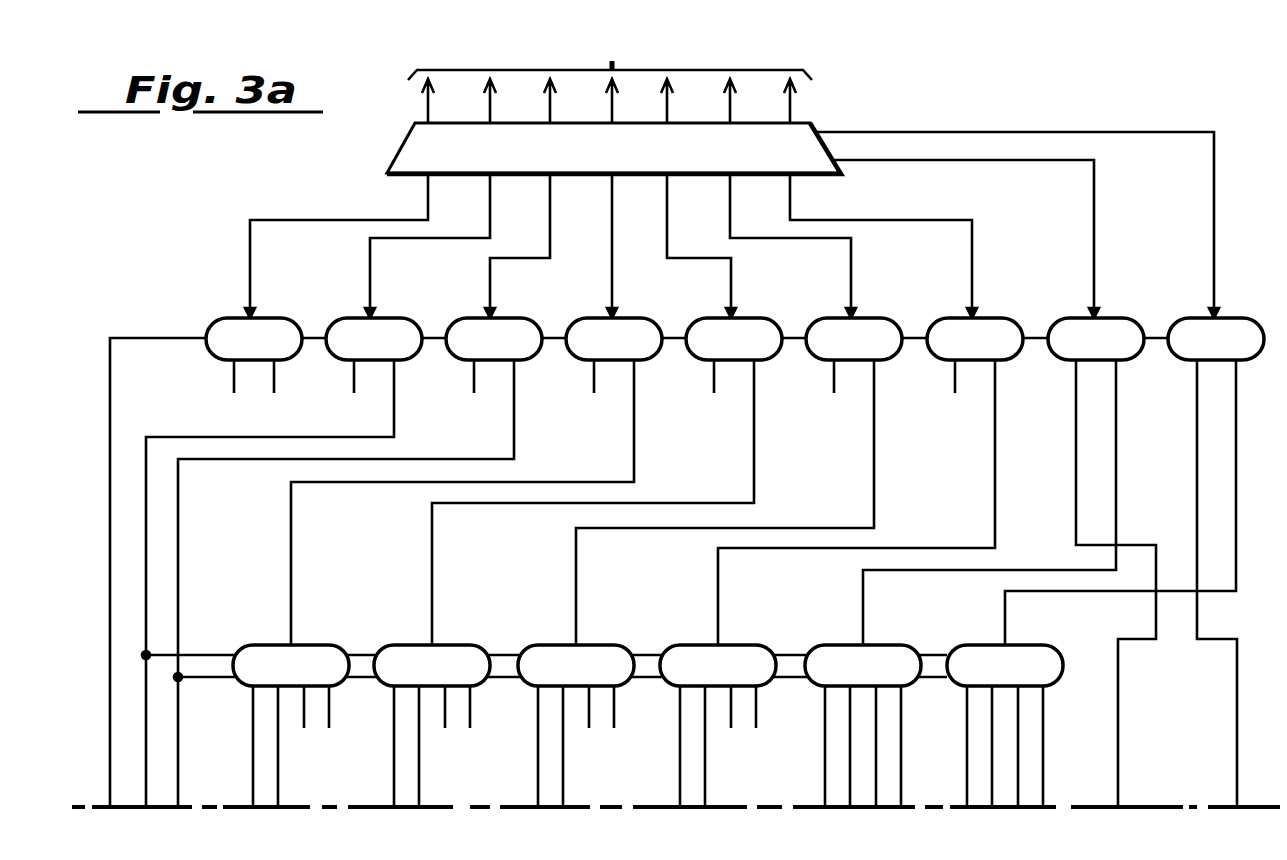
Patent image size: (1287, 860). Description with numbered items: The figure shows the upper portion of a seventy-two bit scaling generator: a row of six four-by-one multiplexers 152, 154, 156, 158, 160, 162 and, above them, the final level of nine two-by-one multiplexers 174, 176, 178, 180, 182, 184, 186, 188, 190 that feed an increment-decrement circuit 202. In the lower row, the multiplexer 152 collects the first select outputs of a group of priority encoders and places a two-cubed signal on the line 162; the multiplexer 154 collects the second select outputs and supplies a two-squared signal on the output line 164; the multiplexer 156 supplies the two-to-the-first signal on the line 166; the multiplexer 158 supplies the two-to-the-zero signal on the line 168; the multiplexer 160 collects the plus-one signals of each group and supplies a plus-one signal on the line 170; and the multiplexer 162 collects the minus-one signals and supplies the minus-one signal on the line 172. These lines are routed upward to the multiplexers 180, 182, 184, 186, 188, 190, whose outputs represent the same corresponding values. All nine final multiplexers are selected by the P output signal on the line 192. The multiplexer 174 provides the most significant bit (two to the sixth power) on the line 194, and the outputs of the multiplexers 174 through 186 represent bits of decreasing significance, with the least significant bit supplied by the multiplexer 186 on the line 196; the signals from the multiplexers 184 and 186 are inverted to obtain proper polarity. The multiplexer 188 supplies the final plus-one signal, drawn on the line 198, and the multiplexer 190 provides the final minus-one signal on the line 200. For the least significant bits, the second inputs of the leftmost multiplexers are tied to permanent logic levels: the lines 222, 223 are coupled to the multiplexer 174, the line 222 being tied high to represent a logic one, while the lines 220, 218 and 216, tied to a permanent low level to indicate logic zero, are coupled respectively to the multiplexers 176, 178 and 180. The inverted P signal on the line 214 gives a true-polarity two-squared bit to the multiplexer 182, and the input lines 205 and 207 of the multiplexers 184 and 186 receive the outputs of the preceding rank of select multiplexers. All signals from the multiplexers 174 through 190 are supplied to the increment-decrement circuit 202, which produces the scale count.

The multiplexer 152 is at (308, 645).
The multiplexer 154 is at (449, 645).
The multiplexer 156 is at (593, 645).
The multiplexer 158 is at (735, 645).
The multiplexer 160 is at (880, 645).
The multiplexer / output line 162 is at (288, 522).
The output line 164 is at (431, 537).
The line 166 is at (573, 558).
The line 168 is at (716, 575).
The line 170 is at (858, 595).
The line 172 is at (1003, 606).
The multiplexer 174 is at (282, 317).
The multiplexer 176 is at (402, 317).
The multiplexer 178 is at (522, 317).
The multiplexer 180 is at (642, 317).
The multiplexer 182 is at (762, 317).
The multiplexer 184 is at (882, 317).
The multiplexer 186 is at (1004, 317).
The multiplexer 188 is at (1124, 317).
The multiplexer 190 is at (1242, 317).
The line 192 is at (147, 336).
The line 194 is at (288, 219).
The line 196 is at (868, 220).
The output line from increment/decrement circuit 198 is at (963, 160).
The line 200 is at (1142, 132).
The increment-decrement circuit 202 is at (405, 140).
The 2-1 multiplexer input 205 is at (831, 377).
The 2-1 multiplexer input 207 is at (952, 377).
The line 214 is at (711, 377).
The line 216 is at (591, 377).
The line 218 is at (471, 377).
The line 220 is at (351, 377).
The output line 222 is at (275, 388).
The line 223 is at (231, 377).